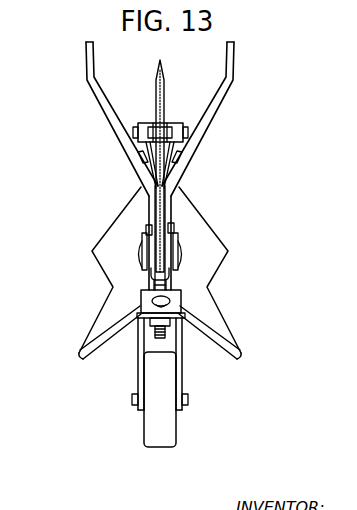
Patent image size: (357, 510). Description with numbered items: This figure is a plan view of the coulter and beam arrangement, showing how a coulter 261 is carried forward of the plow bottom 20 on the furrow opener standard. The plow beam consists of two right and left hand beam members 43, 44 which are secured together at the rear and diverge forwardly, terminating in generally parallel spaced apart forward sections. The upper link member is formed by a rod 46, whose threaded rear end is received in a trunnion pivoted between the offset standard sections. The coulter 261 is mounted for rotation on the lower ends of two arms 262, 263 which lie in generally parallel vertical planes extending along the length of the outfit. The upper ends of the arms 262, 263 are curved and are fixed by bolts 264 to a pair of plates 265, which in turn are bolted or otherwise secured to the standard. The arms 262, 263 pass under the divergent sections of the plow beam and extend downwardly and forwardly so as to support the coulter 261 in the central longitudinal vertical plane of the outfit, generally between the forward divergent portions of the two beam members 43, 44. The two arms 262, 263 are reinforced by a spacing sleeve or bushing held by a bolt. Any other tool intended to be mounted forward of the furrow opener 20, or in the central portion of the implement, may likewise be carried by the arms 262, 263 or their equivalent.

The plow bottom 20 is at (219, 268).
The right hand beam member 43 is at (219, 111).
The left hand beam member 44 is at (103, 117).
The rod 46 is at (160, 264).
The coulter 261 is at (163, 80).
The coulter supporting arm 262 is at (142, 157).
The coulter supporting arm 263 is at (178, 157).
The bolts 264 is at (138, 252).
The plates 265 is at (168, 227).